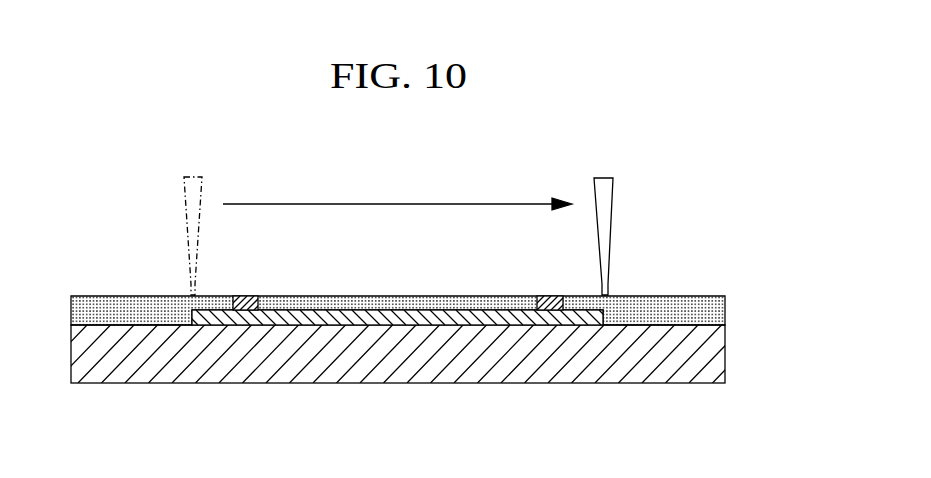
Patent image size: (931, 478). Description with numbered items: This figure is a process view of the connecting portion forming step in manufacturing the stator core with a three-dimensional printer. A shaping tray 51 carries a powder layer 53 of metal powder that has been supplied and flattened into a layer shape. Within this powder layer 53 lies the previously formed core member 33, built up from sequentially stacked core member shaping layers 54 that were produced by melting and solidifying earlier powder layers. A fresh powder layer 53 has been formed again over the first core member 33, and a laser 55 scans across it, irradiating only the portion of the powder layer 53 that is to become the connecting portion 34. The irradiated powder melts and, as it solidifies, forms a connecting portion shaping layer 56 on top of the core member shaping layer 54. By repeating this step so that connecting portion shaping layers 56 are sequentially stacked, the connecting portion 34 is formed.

The shaping tray 51 is at (720, 362).
The powder layer 53 is at (126, 297).
The core member shaping layer 54 is at (398, 287).
The core member 33 is at (392, 317).
The connecting portion shaping layer 56 is at (405, 271).
The connecting portion 34 is at (246, 297).
The laser 55 is at (605, 180).